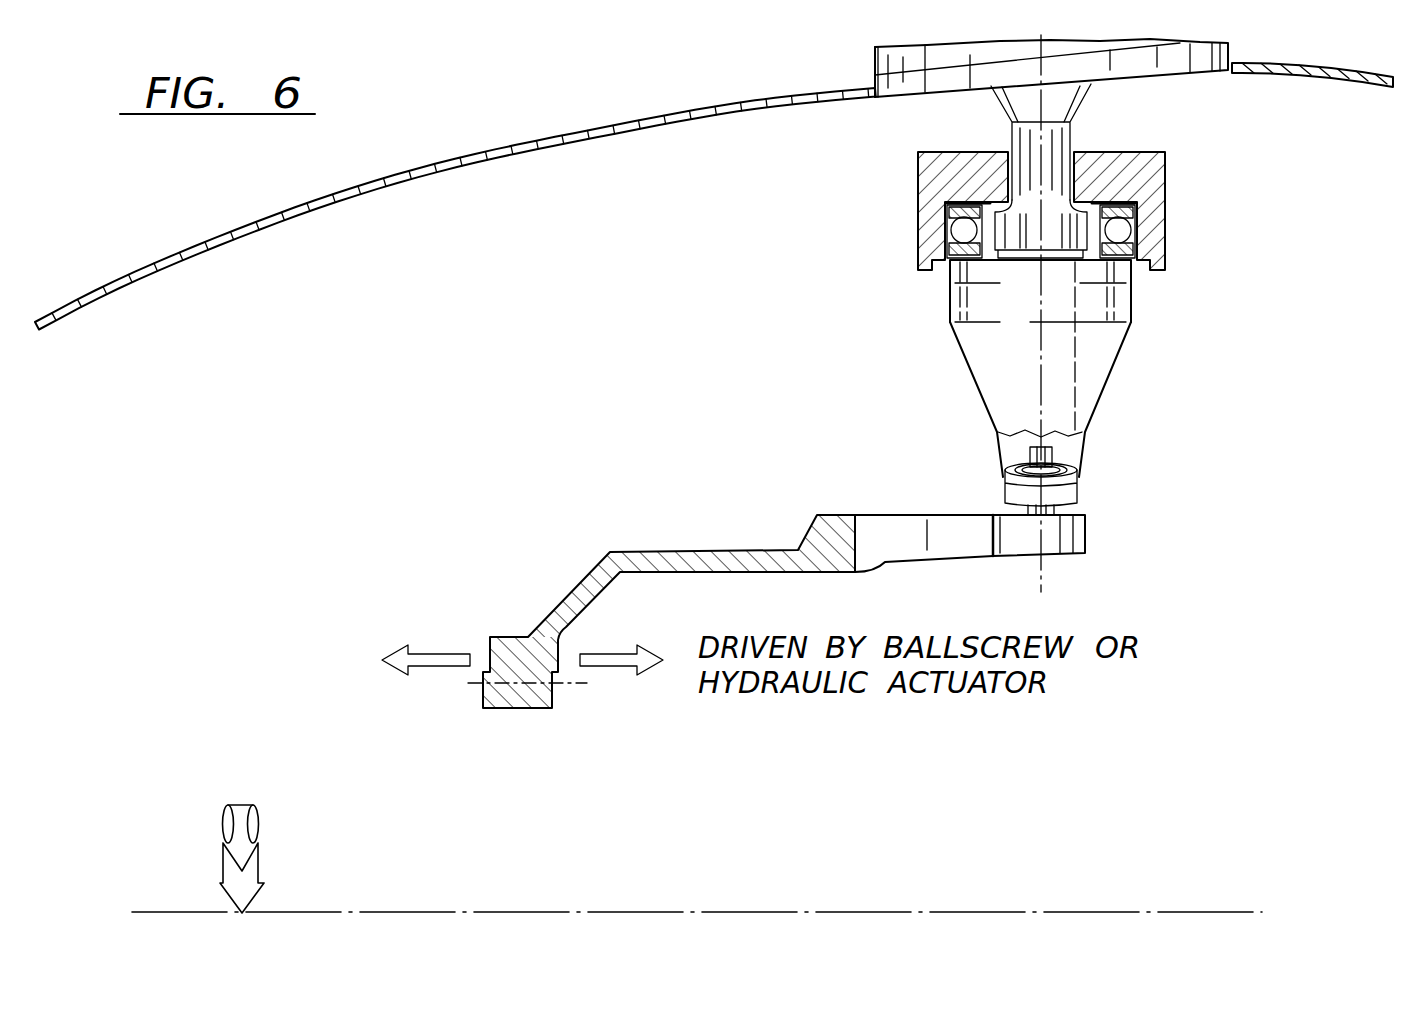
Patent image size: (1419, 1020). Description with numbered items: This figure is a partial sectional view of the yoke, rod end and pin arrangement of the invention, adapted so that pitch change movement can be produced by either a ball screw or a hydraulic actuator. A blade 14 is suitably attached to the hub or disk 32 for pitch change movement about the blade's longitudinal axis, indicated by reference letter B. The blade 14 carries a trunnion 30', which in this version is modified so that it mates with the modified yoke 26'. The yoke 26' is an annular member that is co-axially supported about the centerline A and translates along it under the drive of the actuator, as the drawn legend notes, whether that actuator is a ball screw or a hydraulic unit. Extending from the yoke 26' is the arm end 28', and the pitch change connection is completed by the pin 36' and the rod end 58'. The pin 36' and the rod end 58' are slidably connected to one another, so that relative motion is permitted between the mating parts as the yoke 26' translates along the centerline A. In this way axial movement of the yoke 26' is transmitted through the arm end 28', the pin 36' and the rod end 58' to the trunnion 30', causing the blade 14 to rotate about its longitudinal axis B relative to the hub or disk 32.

The blade 14 is at (1138, 62).
The hub or disk 32 is at (1155, 163).
The trunnion 30' is at (1101, 368).
The pin 36' is at (1108, 469).
The rod end 58' is at (1104, 507).
The arm end 28' is at (970, 515).
The yoke 26' is at (618, 611).
The centerline A is at (1162, 910).
The blade longitudinal axis B is at (875, 78).